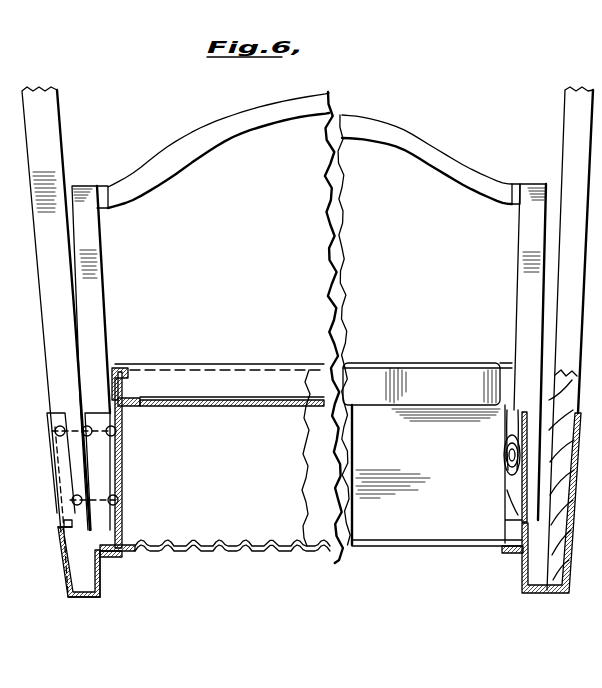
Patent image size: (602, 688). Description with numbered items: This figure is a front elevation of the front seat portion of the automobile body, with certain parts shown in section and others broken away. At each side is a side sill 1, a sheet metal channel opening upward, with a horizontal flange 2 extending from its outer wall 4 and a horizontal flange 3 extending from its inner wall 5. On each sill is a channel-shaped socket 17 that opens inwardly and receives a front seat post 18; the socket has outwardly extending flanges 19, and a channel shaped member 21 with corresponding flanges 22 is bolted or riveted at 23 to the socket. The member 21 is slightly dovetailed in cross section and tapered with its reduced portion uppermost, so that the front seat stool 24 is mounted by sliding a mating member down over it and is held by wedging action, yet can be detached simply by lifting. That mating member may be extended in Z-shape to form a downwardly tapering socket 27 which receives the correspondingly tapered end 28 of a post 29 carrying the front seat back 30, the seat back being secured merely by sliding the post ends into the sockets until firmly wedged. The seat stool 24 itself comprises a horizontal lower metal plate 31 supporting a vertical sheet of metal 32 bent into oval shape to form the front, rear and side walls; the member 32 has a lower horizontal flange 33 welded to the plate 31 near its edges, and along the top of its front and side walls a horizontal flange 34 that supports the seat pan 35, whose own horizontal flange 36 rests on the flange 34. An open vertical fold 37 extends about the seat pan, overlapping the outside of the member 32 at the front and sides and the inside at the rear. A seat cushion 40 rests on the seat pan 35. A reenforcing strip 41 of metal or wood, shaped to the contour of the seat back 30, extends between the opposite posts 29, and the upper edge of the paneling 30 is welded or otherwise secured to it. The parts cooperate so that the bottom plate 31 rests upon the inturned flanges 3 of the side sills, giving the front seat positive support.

The side sill 1 is at (69, 596).
The horizontal flange 2 is at (64, 520).
The horizontal flange 3 is at (112, 556).
The outer wall 4 is at (61, 561).
The inner wall 5 is at (105, 588).
The socket 17 is at (62, 458).
The post 18 is at (47, 334).
The outwardly extending flange 19 is at (72, 474).
The channel shaped member 21 is at (78, 386).
The flange 22 is at (82, 446).
The bolt or rivet 23 is at (60, 418).
The front seat stool 24 is at (328, 465).
The socket 27 is at (98, 414).
The tapered end 28 is at (510, 456).
The post 29 is at (80, 228).
The front seat back 30 is at (458, 212).
The horizontal lower metal plate 31 is at (250, 550).
The vertical sheet of metal 32 is at (128, 480).
The lower horizontal flange 33 is at (122, 532).
The horizontal flange 34 is at (132, 406).
The seat pan 35 is at (270, 414).
The horizontal flange 36 is at (132, 398).
The open vertical fold 37 is at (126, 372).
The seat cushion 40 is at (392, 406).
The reenforcing strip 41 is at (288, 104).